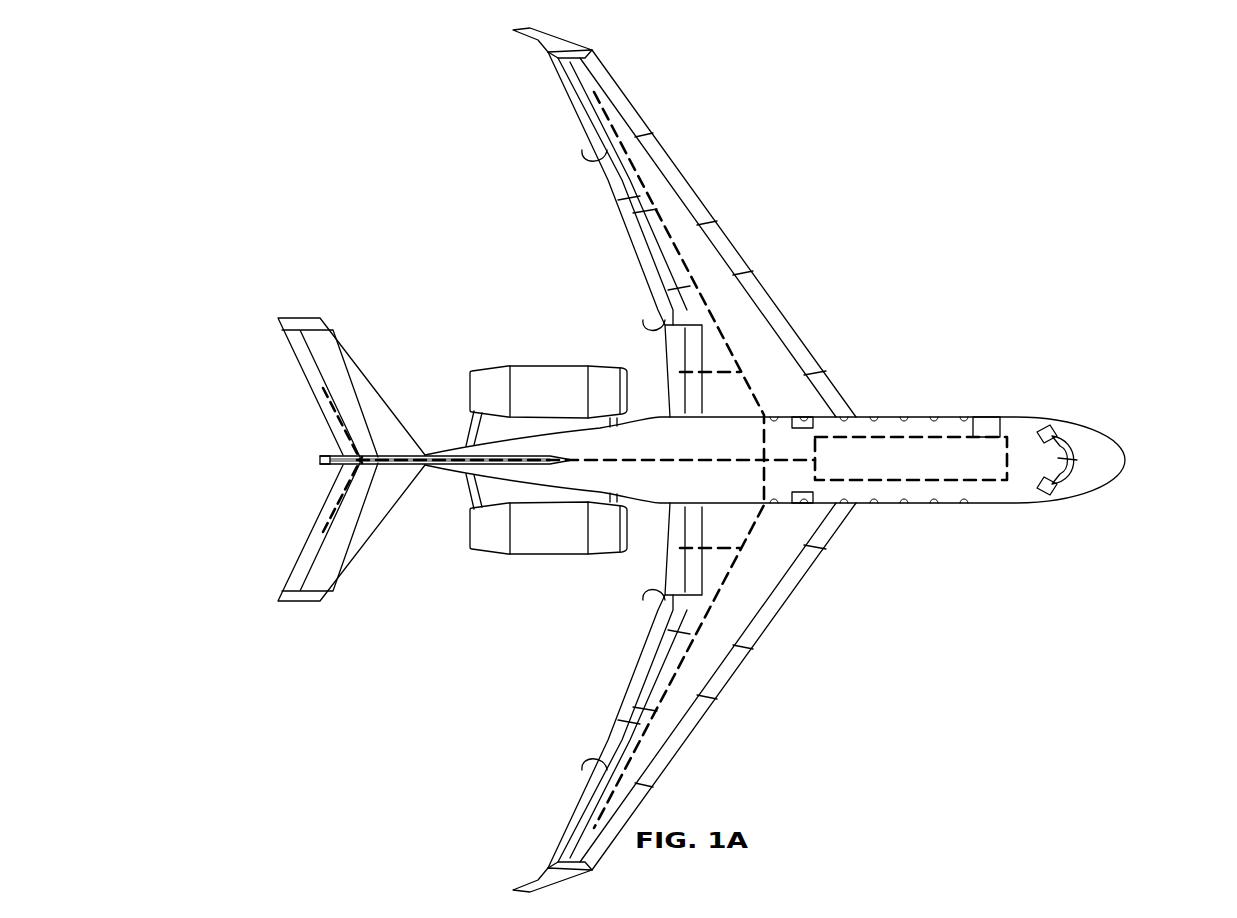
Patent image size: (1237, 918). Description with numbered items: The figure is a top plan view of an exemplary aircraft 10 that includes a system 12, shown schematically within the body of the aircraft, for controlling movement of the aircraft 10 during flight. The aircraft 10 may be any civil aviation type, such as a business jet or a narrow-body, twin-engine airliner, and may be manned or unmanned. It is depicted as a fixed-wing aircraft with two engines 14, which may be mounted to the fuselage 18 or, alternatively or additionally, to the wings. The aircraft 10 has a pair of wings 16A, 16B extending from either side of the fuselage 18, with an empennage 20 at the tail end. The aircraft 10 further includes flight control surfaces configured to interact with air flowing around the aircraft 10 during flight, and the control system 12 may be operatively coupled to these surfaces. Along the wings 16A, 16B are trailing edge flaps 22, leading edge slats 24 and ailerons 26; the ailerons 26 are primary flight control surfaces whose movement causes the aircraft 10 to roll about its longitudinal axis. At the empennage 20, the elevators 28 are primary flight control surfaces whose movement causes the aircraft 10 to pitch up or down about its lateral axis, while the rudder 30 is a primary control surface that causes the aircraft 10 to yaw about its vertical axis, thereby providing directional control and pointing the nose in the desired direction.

The aircraft 10 is at (1104, 148).
The system 12 is at (911, 458).
The engines 14 is at (547, 372).
The wing 16A is at (788, 662).
The wing 16B is at (790, 284).
The fuselage 18 is at (703, 430).
The empennage 20 is at (293, 457).
The trailing edge flaps 22 is at (670, 340).
The leading edge slats 24 is at (775, 312).
The ailerons 26 is at (587, 115).
The elevators 28 is at (305, 360).
The rudder 30 is at (342, 462).